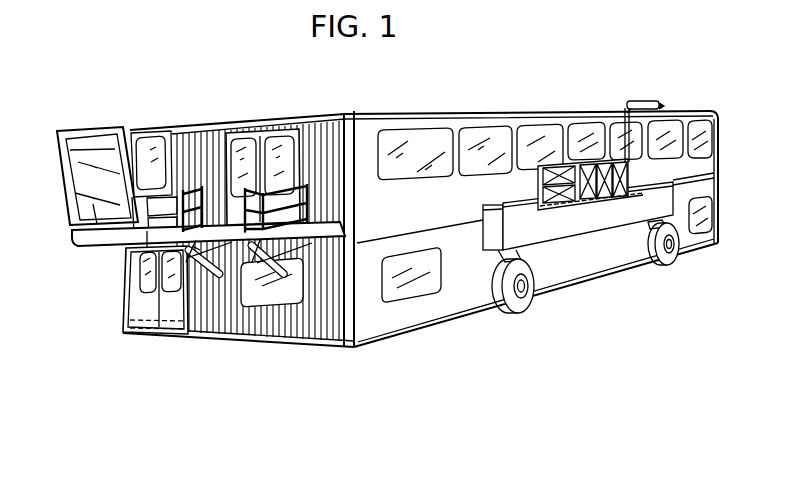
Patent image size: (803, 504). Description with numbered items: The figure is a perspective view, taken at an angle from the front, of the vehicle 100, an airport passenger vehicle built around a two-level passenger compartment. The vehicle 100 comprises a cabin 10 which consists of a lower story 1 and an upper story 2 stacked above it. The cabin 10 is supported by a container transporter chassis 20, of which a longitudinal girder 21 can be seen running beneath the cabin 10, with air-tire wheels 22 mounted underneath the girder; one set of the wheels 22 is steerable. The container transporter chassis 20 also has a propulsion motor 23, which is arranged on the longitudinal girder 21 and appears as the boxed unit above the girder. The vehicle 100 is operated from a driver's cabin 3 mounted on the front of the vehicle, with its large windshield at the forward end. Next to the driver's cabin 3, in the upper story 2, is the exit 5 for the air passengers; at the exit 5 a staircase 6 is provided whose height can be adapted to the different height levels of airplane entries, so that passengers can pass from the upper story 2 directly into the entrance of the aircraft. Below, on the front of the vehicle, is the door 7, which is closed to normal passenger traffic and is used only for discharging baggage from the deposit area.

The lower story 1 is at (716, 232).
The upper story 2 is at (717, 148).
The driver's cabin 3 is at (92, 212).
The exit 5 is at (277, 142).
The staircase 6 is at (184, 250).
The door 7 is at (146, 306).
The cabin 10 is at (472, 114).
The container transporter chassis 20 is at (572, 236).
The longitudinal girder 21 is at (622, 216).
The air-tire wheels 22 is at (512, 314).
The propulsion motor 23 is at (584, 164).
The vehicle 100 is at (646, 83).